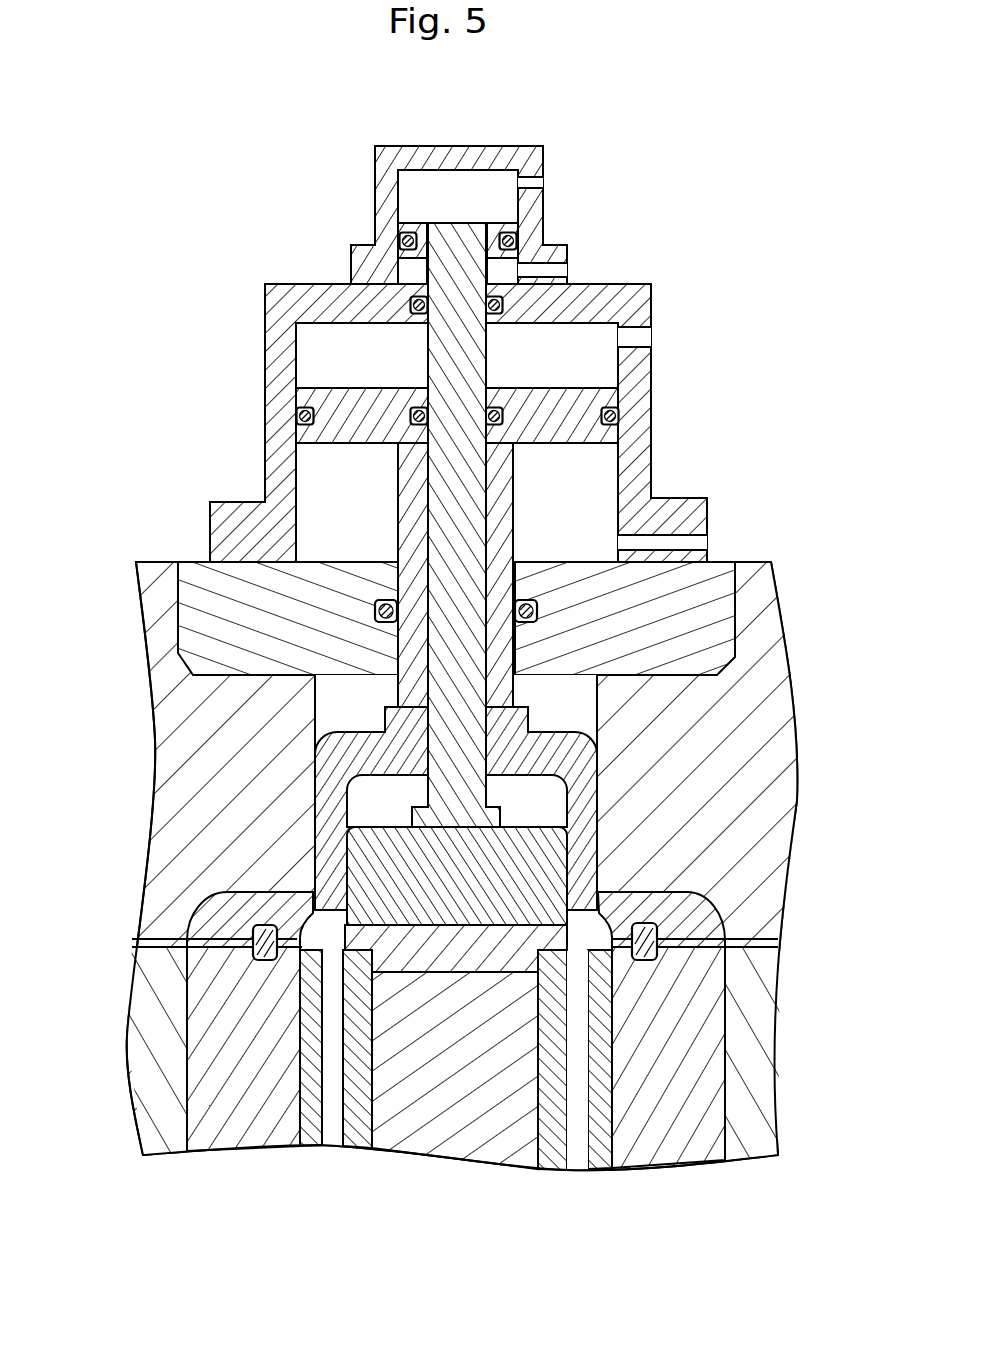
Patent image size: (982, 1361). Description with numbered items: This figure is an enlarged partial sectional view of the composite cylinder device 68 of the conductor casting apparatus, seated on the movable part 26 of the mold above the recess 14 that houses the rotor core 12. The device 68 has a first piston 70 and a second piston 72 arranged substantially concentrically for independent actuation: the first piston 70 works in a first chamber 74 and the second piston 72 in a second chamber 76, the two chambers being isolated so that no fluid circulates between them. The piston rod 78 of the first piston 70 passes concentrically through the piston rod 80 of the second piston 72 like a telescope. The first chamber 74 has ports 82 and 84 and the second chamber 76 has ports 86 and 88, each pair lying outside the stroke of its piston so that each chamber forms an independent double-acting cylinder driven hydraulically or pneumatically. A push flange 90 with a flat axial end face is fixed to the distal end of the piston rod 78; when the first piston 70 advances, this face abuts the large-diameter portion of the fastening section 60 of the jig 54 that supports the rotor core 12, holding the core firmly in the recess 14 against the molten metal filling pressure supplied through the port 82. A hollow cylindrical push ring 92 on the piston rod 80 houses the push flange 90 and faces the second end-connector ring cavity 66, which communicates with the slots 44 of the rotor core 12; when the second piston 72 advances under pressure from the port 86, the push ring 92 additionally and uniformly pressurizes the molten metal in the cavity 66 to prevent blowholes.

The rotor core 12 is at (628, 1048).
The recess 14 is at (612, 1104).
The movable part 26 is at (785, 646).
The slots 44 is at (318, 1090).
The jig 54 is at (502, 1024).
The fastening section 60 is at (300, 988).
The second end-connector ring cavity 66 is at (318, 922).
The composite cylinder device 68 is at (256, 322).
The first piston 70 is at (436, 210).
The second piston 72 is at (335, 388).
The first chamber 74 is at (422, 184).
The second chamber 76 is at (332, 322).
The piston rod 78 is at (428, 352).
The piston rod 80 is at (397, 493).
The port 82 is at (532, 187).
The port 84 is at (556, 275).
The port 86 is at (648, 344).
The port 88 is at (698, 548).
The push flange 90 is at (368, 826).
The push ring 92 is at (347, 730).